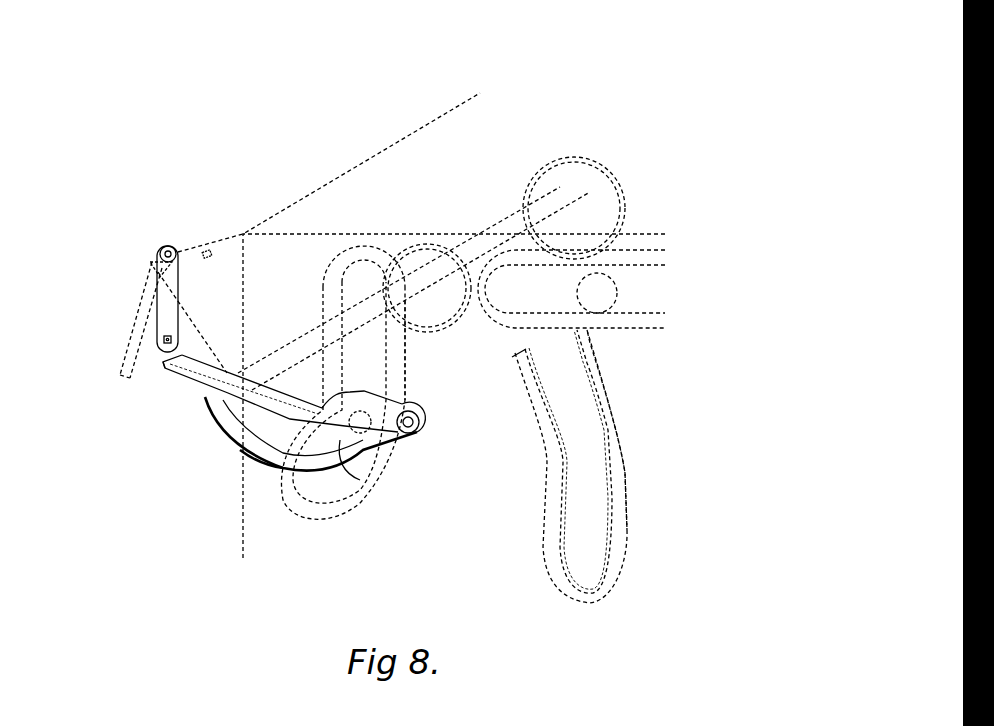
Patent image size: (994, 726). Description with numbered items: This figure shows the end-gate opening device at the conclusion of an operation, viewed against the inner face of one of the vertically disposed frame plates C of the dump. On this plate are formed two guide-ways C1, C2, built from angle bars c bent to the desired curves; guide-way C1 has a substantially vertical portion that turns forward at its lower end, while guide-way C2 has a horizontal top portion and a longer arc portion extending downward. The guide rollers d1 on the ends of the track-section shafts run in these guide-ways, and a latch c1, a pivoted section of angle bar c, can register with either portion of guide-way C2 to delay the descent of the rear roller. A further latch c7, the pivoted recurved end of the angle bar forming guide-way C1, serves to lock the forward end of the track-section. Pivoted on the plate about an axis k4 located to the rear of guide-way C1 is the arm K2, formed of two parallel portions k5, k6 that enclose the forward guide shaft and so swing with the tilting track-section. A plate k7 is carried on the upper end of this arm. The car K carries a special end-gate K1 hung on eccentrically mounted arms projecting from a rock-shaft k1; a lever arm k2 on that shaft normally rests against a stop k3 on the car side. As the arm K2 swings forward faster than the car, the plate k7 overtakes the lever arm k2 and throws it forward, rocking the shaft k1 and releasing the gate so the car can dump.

The car K is at (421, 325).
The end-gate K1 is at (135, 328).
The rock-shaft k1 is at (169, 245).
The lever arm k2 is at (178, 313).
The arm K2 is at (232, 443).
The stop k3 is at (208, 251).
The pivotal axis k4 is at (420, 428).
The parallel portion k5 is at (270, 398).
The parallel portion k6 is at (267, 470).
The plate k7 is at (177, 378).
The frame plate C is at (235, 533).
The guide-way C1 is at (343, 389).
The guide-way C2 is at (571, 466).
The angle bar c is at (400, 377).
The latch c1 is at (508, 330).
The latch c7 is at (330, 277).
The guide roller d1 is at (360, 480).